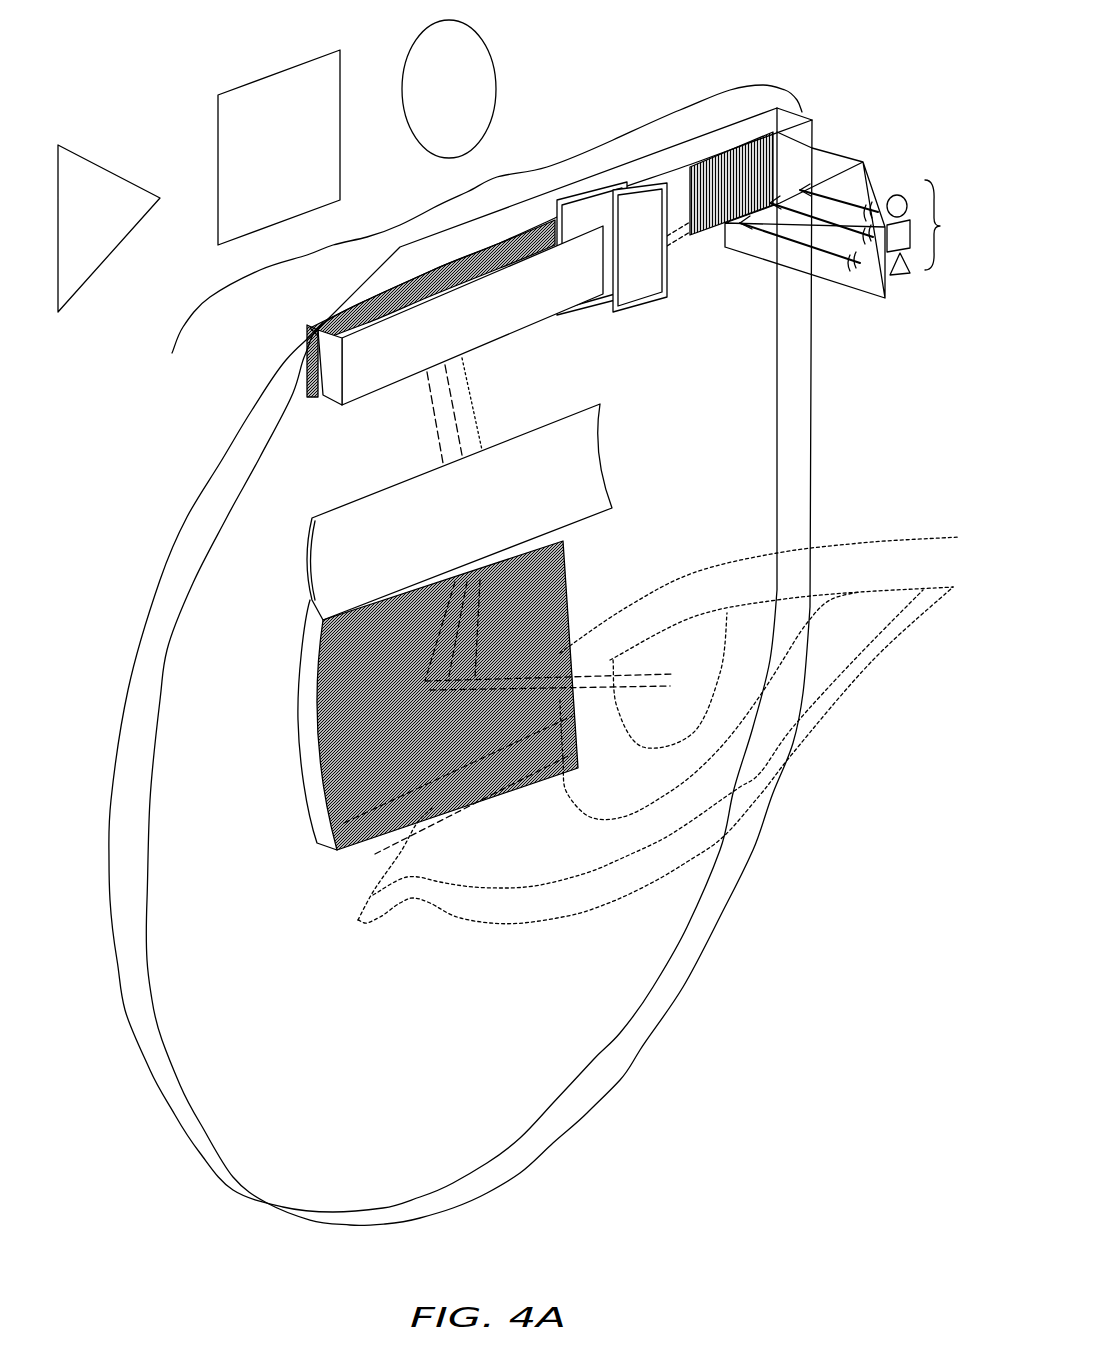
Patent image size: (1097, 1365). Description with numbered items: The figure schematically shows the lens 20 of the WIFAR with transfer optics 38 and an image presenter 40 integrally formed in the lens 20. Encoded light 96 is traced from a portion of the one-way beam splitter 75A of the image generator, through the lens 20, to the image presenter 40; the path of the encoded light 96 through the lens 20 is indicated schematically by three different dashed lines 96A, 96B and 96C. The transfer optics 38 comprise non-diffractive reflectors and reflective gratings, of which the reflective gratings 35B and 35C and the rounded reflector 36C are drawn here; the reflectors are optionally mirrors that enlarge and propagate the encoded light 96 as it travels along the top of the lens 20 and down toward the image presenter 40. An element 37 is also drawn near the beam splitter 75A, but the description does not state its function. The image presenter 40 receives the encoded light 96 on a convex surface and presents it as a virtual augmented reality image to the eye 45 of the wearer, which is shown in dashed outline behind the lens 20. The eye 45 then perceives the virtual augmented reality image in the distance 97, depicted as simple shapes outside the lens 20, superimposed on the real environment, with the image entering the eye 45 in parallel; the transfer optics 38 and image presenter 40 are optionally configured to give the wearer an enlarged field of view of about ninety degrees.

The lens 20 is at (583, 1103).
The reflective grating 35B is at (302, 405).
The reflective grating 35C is at (303, 330).
The rounded reflector 36C is at (340, 540).
The in-coupler grating 37 is at (713, 153).
The transfer optics 38 is at (484, 180).
The image presenter 40 is at (330, 807).
The eye 45 is at (797, 760).
The one-way beam splitter 75A is at (860, 180).
The encoded light 96 is at (929, 227).
The dashed line 96A is at (432, 418).
The dashed line 96B is at (455, 413).
The dashed line 96C is at (470, 383).
The virtual augmented reality image in the distance 97 is at (277, 68).